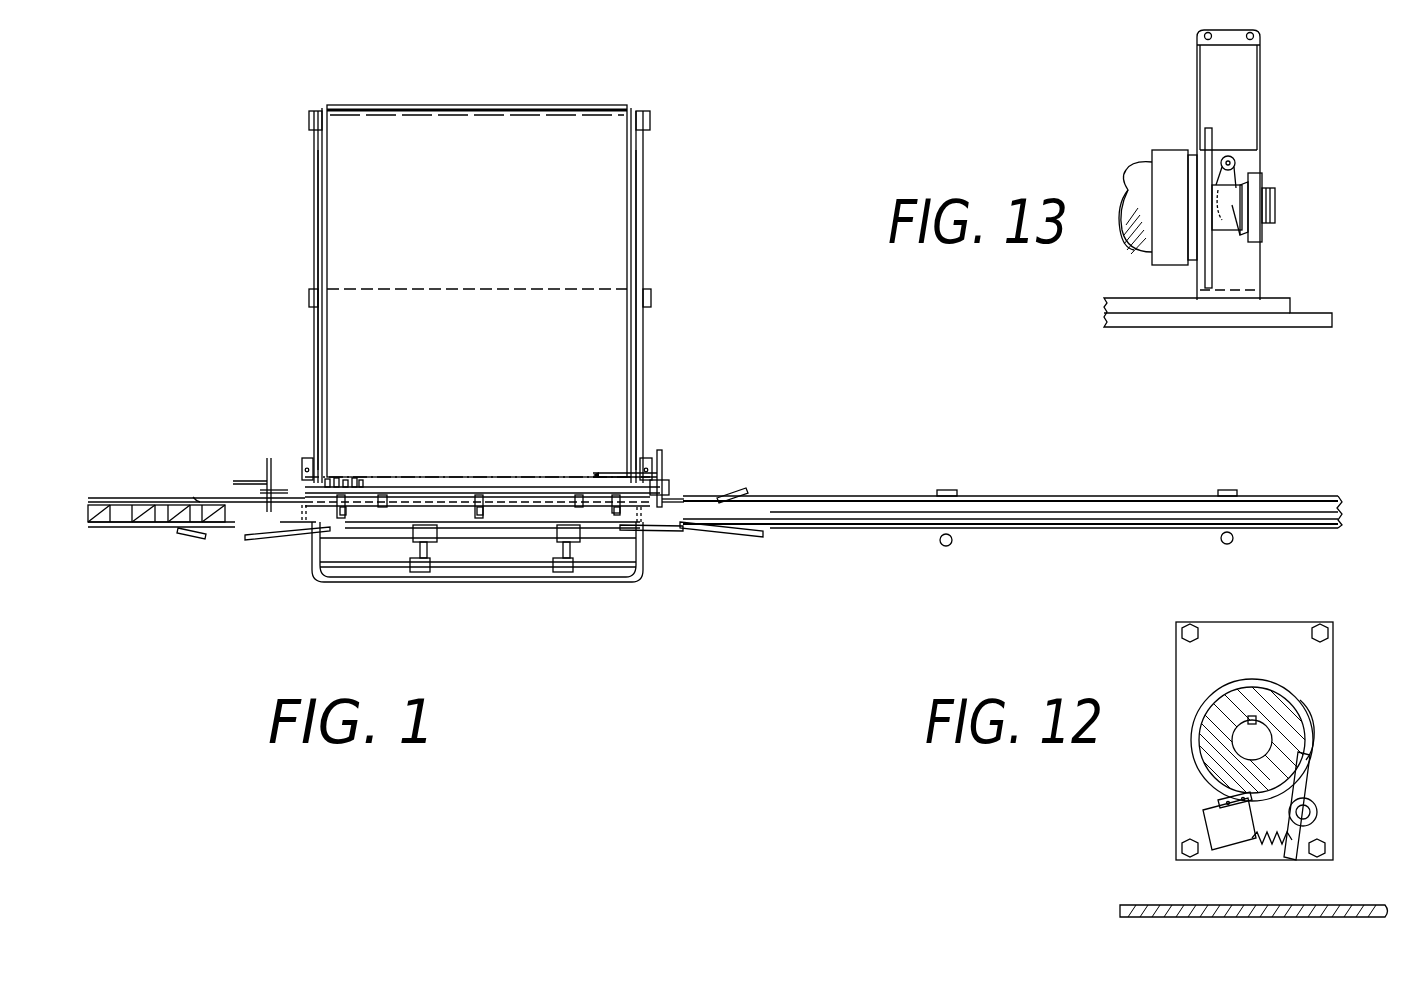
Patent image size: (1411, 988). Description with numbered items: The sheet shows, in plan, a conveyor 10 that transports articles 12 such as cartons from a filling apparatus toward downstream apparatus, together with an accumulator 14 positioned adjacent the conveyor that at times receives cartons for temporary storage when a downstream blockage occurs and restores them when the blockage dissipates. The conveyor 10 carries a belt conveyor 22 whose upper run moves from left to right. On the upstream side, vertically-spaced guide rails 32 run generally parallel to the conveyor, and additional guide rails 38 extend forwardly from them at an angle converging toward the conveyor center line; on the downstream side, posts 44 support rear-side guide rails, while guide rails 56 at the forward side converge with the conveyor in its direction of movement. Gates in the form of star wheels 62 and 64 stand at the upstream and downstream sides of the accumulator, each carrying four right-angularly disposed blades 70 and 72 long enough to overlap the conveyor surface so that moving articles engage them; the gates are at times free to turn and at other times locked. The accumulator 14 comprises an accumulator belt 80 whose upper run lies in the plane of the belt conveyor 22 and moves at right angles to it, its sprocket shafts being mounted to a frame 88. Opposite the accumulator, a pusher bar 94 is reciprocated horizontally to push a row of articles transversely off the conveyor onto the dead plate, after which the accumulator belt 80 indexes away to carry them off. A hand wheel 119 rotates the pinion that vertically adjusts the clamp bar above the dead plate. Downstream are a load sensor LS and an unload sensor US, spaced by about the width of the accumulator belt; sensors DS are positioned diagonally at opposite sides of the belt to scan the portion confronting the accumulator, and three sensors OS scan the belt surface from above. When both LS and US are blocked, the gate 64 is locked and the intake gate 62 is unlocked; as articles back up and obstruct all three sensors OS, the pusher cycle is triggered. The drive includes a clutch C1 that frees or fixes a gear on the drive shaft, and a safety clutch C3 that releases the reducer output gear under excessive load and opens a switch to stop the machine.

In FIG. 1, the conveyor 10 is at (878, 537).
In FIG. 1, the articles 12 is at (150, 528).
In FIG. 1, the accumulator 14 is at (652, 218).
In FIG. 1, the belt conveyor 22 is at (985, 515).
In FIG. 1, the guide rails 32 is at (95, 528).
In FIG. 1, the guide rails 38 is at (283, 538).
In FIG. 1, the posts 44 is at (825, 497).
In FIG. 1, the guide rails 56 is at (722, 535).
In FIG. 1, the star wheel 62 is at (250, 458).
In FIG. 1, the star wheel 64 is at (684, 469).
In FIG. 1, the blades 70 is at (233, 482).
In FIG. 1, the blades 72 is at (675, 497).
In FIG. 1, the accumulator belt 80 is at (477, 291).
In FIG. 1, the frame 88 is at (314, 263).
In FIG. 1, the pusher bar 94 is at (500, 522).
In FIG. 1, the hand wheel 119 is at (662, 452).
In FIG. 1, the sensors OS is at (350, 503).
In FIG. 1, the sensors DS is at (190, 538).
In FIG. 1, the load sensor LS is at (941, 552).
In FIG. 1, the unload sensor US is at (1221, 551).
In FIG. 12, the clutch C1 is at (1315, 718).
In FIG. 13, the safety clutch C3 is at (1272, 169).